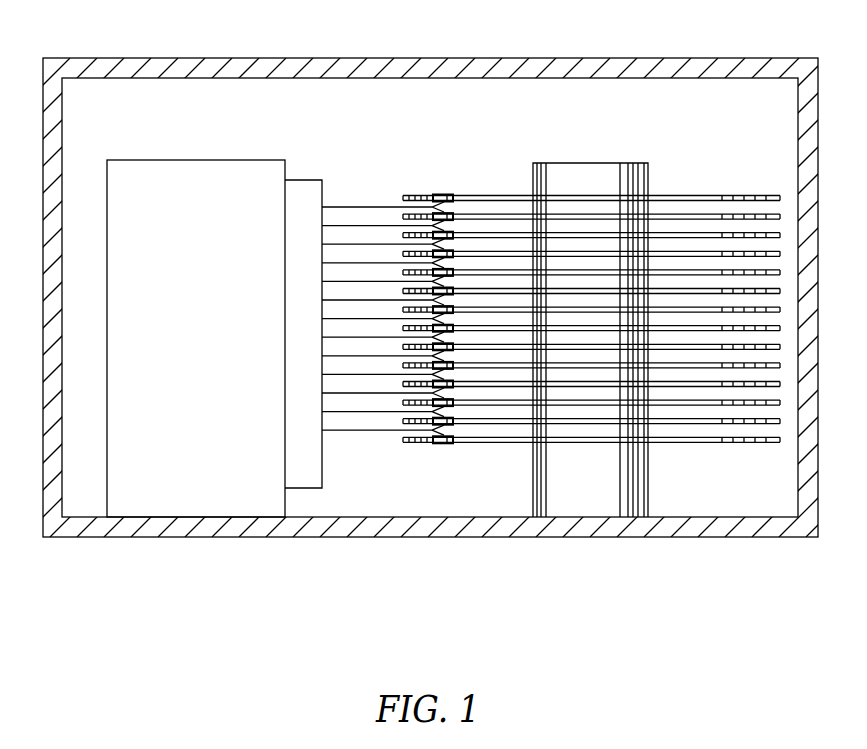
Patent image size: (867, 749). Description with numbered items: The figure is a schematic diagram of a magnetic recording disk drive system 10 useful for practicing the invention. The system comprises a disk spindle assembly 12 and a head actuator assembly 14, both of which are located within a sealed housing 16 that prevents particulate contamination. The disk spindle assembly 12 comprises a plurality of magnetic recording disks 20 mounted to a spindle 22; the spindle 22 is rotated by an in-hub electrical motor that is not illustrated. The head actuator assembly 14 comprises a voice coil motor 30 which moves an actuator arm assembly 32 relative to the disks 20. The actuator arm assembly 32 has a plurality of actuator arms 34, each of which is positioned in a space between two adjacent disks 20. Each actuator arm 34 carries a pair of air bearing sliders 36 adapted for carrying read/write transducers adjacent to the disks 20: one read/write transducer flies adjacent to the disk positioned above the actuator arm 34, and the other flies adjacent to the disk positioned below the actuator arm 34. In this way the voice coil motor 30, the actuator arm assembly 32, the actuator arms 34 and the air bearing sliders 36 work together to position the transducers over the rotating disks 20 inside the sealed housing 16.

The electrical connector assembly 10 is at (433, 331).
The disk spindle assembly 12 is at (591, 303).
The head actuator assembly 14 is at (215, 306).
The sealed housing 16 is at (396, 58).
The magnetic recording disks 20 is at (485, 194).
The spindle 22 is at (610, 163).
The voice coil motor 30 is at (205, 263).
The actuator arm assembly 32 is at (302, 180).
The actuator arms 34 is at (356, 205).
The air bearing sliders 36 is at (452, 196).